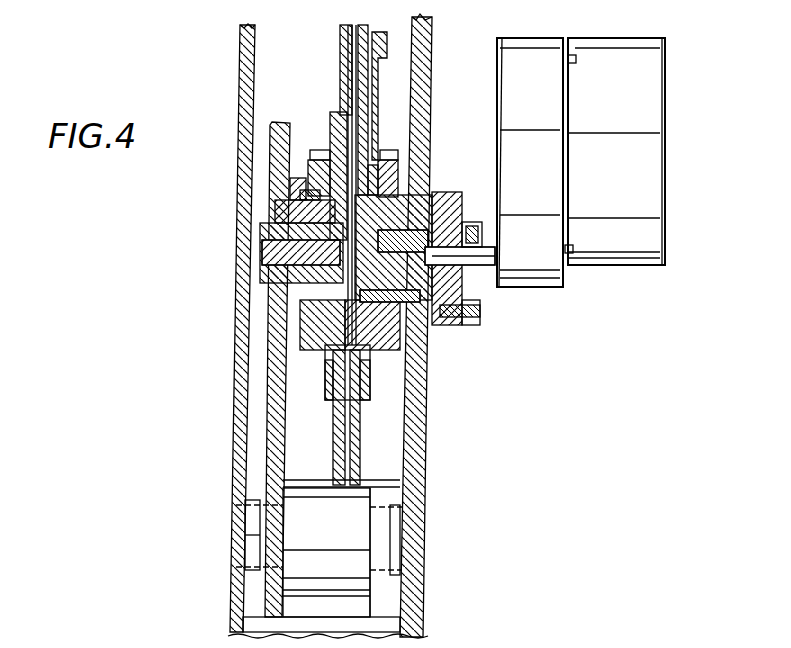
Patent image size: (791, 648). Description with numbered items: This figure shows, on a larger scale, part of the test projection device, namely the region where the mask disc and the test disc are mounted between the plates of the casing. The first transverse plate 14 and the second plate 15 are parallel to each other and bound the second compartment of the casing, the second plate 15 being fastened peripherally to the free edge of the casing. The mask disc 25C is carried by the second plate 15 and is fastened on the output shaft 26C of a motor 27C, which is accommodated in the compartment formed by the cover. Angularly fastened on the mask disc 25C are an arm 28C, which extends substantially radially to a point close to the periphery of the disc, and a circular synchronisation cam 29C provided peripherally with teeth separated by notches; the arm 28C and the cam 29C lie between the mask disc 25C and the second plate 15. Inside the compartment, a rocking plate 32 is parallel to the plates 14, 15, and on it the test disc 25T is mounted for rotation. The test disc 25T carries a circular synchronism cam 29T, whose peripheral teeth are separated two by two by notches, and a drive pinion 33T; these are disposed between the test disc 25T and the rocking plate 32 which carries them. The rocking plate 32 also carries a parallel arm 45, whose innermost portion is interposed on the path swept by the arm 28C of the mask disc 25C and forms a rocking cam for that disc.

The first transverse plate 14 is at (246, 50).
The rocking plate 32 is at (268, 120).
The synchronism cam 29T is at (322, 160).
The drive pinion 33T is at (296, 196).
The arm 28C is at (373, 76).
The synchronisation cam 29C is at (392, 164).
The motor 27C is at (640, 70).
The output shaft 26C is at (470, 265).
The arm 45 is at (388, 425).
The test disc 25T is at (336, 430).
The mask disc 25C is at (360, 468).
The second plate 15 is at (420, 506).